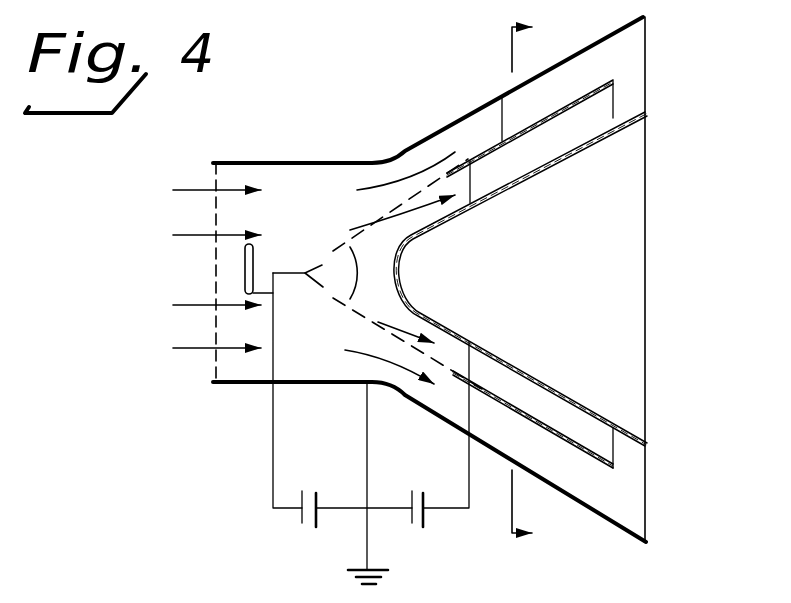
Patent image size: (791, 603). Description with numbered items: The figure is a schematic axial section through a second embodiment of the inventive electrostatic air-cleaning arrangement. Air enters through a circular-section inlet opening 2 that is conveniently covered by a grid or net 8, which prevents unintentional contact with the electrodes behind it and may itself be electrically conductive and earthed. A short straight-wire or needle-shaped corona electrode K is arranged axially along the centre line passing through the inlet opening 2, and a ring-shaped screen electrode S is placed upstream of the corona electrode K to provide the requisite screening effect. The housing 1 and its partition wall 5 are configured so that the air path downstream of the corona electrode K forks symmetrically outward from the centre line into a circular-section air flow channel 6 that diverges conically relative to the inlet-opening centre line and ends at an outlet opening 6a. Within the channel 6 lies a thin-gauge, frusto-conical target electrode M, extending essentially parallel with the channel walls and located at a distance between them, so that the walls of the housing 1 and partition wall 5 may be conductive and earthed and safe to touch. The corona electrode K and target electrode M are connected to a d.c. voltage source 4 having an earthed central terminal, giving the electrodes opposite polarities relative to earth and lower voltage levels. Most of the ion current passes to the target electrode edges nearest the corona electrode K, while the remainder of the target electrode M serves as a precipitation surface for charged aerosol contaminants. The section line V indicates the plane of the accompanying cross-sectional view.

The housing 1 is at (346, 161).
The inlet opening 2 is at (228, 258).
The d.c. voltage source 4 is at (306, 497).
The partition wall 5 is at (424, 313).
The air flow channel 6 is at (471, 114).
The outlet opening 6a is at (646, 60).
The grid or net 8 is at (215, 222).
The screen electrode S is at (253, 245).
The corona electrode K is at (309, 278).
The target electrode M is at (500, 97).
The section line V- V is at (543, 21).